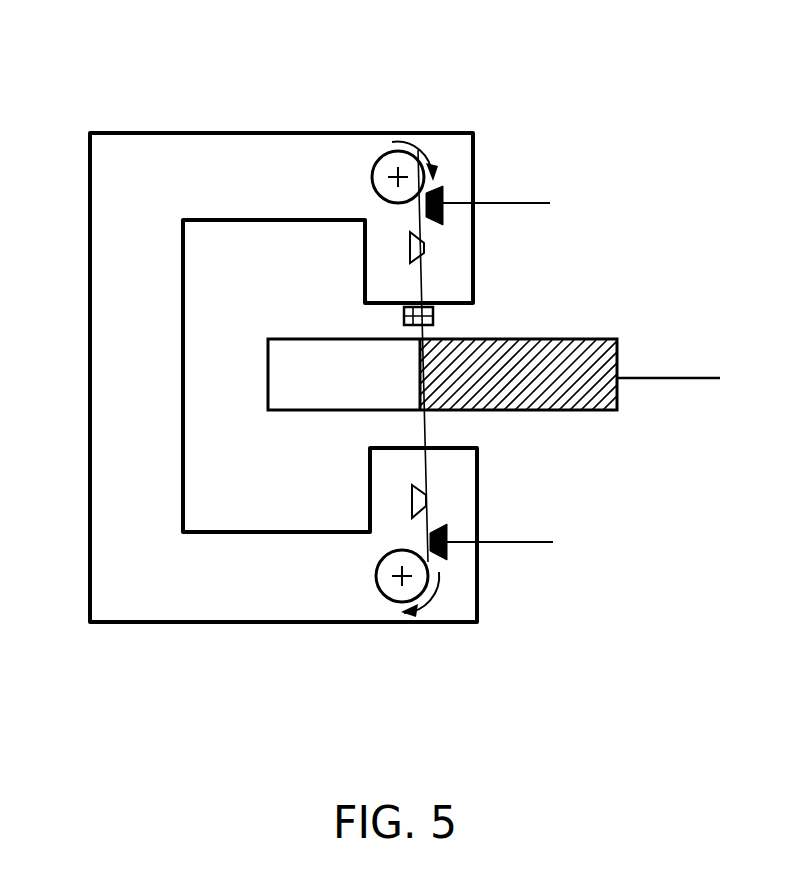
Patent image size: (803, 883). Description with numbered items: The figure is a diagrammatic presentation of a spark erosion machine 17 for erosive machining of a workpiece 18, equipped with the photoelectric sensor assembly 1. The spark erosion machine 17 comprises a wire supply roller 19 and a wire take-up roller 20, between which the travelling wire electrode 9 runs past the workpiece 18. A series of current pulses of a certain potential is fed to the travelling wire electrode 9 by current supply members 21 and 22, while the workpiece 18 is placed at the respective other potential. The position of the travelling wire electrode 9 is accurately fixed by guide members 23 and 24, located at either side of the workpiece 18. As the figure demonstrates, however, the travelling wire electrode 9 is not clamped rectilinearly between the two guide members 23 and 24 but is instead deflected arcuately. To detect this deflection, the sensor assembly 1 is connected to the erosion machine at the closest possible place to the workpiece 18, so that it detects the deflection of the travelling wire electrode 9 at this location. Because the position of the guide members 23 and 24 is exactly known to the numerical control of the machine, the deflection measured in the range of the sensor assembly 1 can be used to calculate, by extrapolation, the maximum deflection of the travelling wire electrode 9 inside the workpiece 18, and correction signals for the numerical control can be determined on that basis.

The spark erosion machine 17 is at (292, 160).
The workpiece 18 is at (577, 357).
The wire supply roller 19 is at (406, 138).
The wire take-up roller 20 is at (398, 592).
The current supply member 21 is at (443, 190).
The current supply member 22 is at (447, 548).
The guide member 23 is at (424, 248).
The guide member 24 is at (427, 500).
The sensor assembly 1 is at (433, 317).
The travelling wire electrode 9 is at (423, 432).